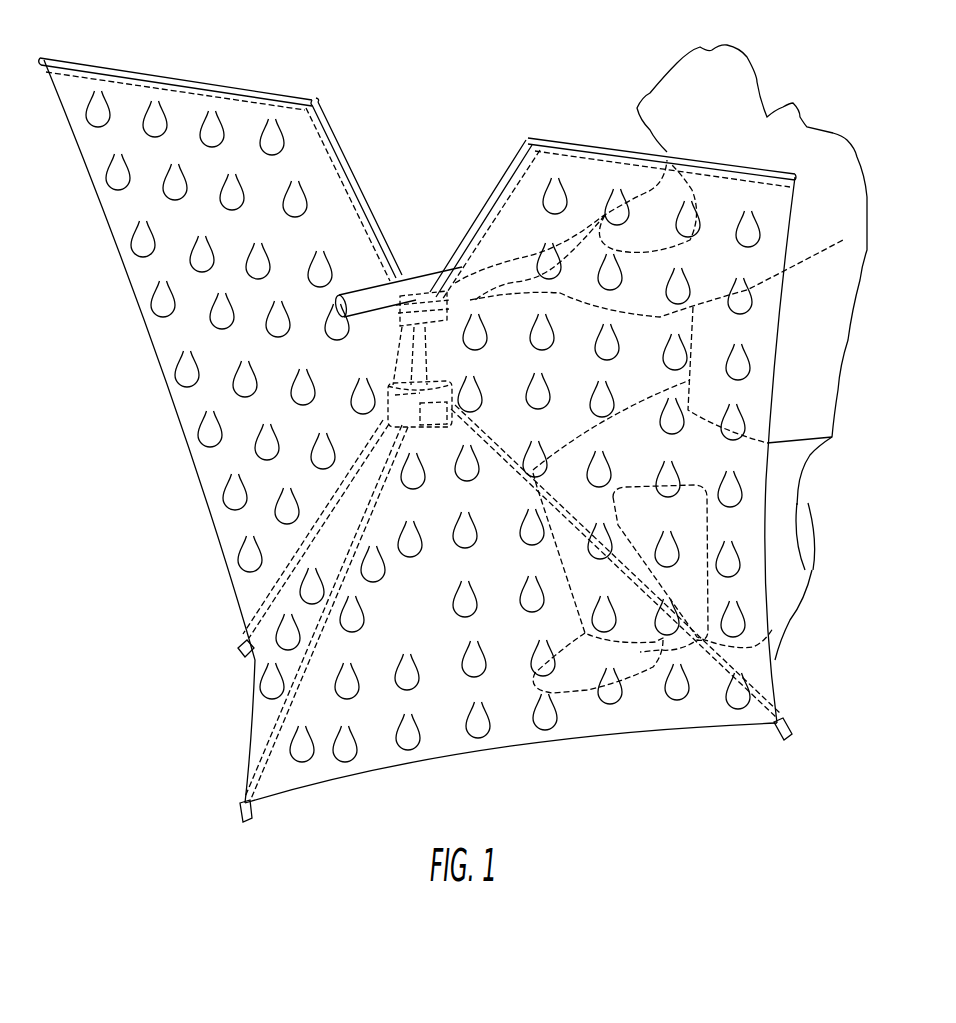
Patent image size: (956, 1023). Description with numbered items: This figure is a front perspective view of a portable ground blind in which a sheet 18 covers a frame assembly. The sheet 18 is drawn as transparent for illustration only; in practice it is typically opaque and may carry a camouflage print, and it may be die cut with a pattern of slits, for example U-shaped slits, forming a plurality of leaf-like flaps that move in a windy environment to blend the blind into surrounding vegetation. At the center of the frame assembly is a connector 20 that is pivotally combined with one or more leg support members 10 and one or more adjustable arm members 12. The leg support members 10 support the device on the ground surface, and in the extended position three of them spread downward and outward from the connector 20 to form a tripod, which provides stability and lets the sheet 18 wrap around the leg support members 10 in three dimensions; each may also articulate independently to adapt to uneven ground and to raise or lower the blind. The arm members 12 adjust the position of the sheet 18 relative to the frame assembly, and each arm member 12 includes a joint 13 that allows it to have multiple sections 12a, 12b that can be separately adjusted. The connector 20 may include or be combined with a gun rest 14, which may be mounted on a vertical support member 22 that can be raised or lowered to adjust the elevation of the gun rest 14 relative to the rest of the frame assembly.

The leg support member 10 is at (273, 727).
The arm member 12 is at (252, 70).
The arm section 12a is at (171, 78).
The arm section 12b is at (358, 184).
The joint 13 is at (522, 127).
The gun rest 14 is at (424, 292).
The sheet 18 is at (620, 735).
The connector 20 is at (388, 410).
The vertical support member 22 is at (403, 358).